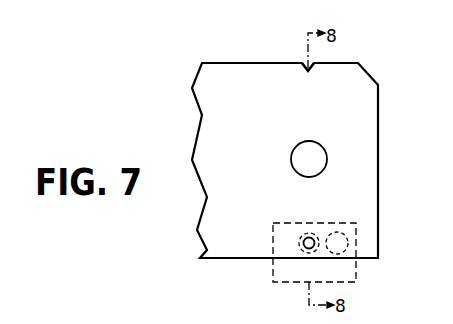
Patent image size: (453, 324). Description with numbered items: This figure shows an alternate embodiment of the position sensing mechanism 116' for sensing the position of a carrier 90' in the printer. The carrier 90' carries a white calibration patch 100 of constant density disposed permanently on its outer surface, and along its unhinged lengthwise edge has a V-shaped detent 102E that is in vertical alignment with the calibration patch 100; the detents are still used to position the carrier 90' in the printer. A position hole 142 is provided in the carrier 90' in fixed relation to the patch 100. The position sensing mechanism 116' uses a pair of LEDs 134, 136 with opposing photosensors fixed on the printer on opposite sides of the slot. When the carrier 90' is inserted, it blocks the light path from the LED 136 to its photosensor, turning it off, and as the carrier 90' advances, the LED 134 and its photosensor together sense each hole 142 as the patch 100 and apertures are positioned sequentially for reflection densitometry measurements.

The carrier 90' is at (245, 160).
The detent 102E is at (305, 63).
The calibration patch 100 is at (313, 146).
The position hole 142 is at (298, 236).
The LED 134 is at (299, 243).
The LED 136 is at (347, 238).
The position sensing mechanism 116' is at (261, 269).